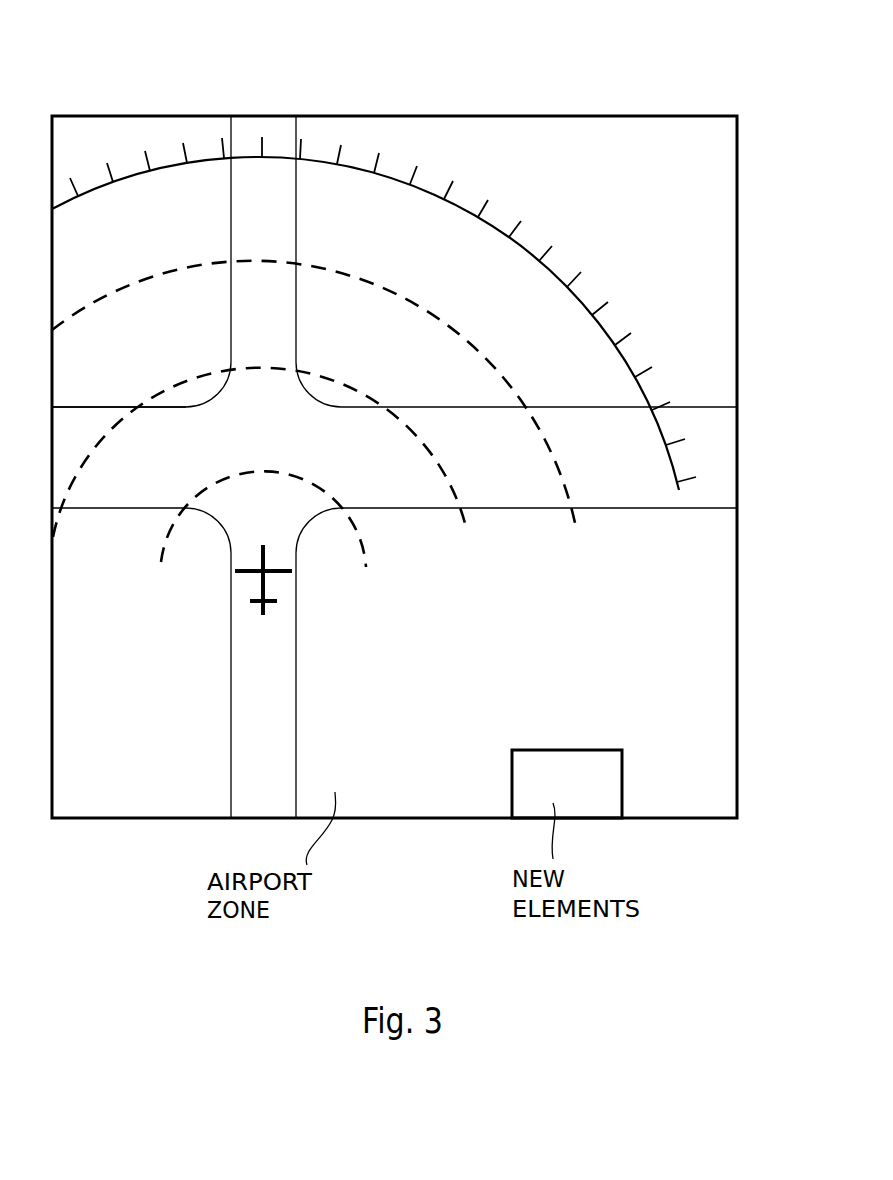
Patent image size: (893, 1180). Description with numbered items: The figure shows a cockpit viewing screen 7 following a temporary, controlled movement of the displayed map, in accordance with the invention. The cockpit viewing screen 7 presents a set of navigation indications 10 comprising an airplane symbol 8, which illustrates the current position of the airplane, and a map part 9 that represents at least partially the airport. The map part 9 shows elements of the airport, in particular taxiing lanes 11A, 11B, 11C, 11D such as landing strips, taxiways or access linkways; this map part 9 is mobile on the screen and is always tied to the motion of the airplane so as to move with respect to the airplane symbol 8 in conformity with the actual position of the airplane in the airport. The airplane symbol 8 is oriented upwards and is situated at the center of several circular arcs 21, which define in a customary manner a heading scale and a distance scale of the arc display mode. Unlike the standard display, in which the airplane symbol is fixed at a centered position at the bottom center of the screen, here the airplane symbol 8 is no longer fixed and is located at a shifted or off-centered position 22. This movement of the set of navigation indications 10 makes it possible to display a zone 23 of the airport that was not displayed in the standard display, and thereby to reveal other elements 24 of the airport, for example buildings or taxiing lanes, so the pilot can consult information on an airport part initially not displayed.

The set of navigation indications 10 is at (484, 149).
The map part 9 is at (212, 237).
The taxiing lane 11A is at (296, 640).
The taxiing lane 11B is at (88, 406).
The taxiing lane 11C is at (446, 508).
The taxiing lane 11D is at (296, 220).
The circular arcs 21 is at (342, 373).
The airplane symbol 8 is at (266, 585).
The off-centered position 22 is at (224, 587).
The zone of the airport 23 is at (425, 778).
The other elements of the airport 24 is at (612, 775).
The cockpit viewing screen 7 is at (663, 820).